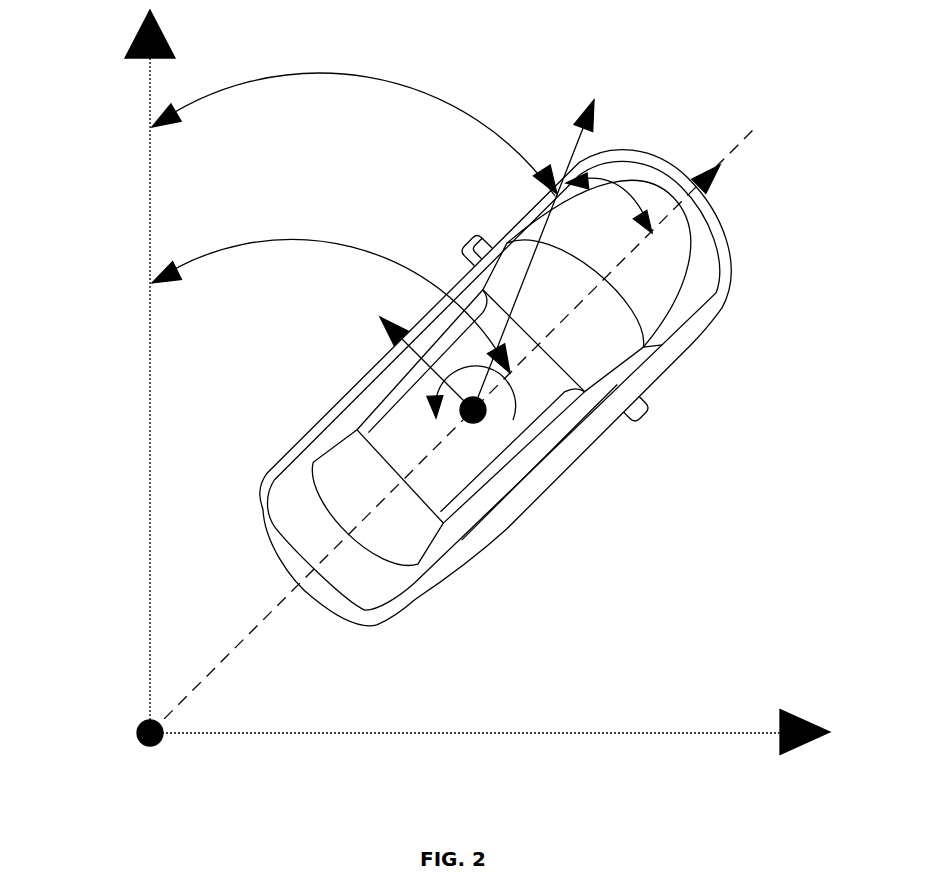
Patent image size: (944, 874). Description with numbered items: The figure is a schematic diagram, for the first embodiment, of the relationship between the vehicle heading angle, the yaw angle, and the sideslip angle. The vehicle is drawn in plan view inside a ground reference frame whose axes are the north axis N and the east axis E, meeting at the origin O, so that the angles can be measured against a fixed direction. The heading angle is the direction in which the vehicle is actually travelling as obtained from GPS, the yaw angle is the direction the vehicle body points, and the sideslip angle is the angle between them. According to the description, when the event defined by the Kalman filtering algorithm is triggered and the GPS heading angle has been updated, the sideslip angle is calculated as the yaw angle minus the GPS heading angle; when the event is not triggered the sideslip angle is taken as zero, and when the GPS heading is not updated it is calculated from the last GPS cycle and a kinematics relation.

The north axis N is at (121, 368).
The east axis E is at (497, 693).
The origin O is at (105, 733).